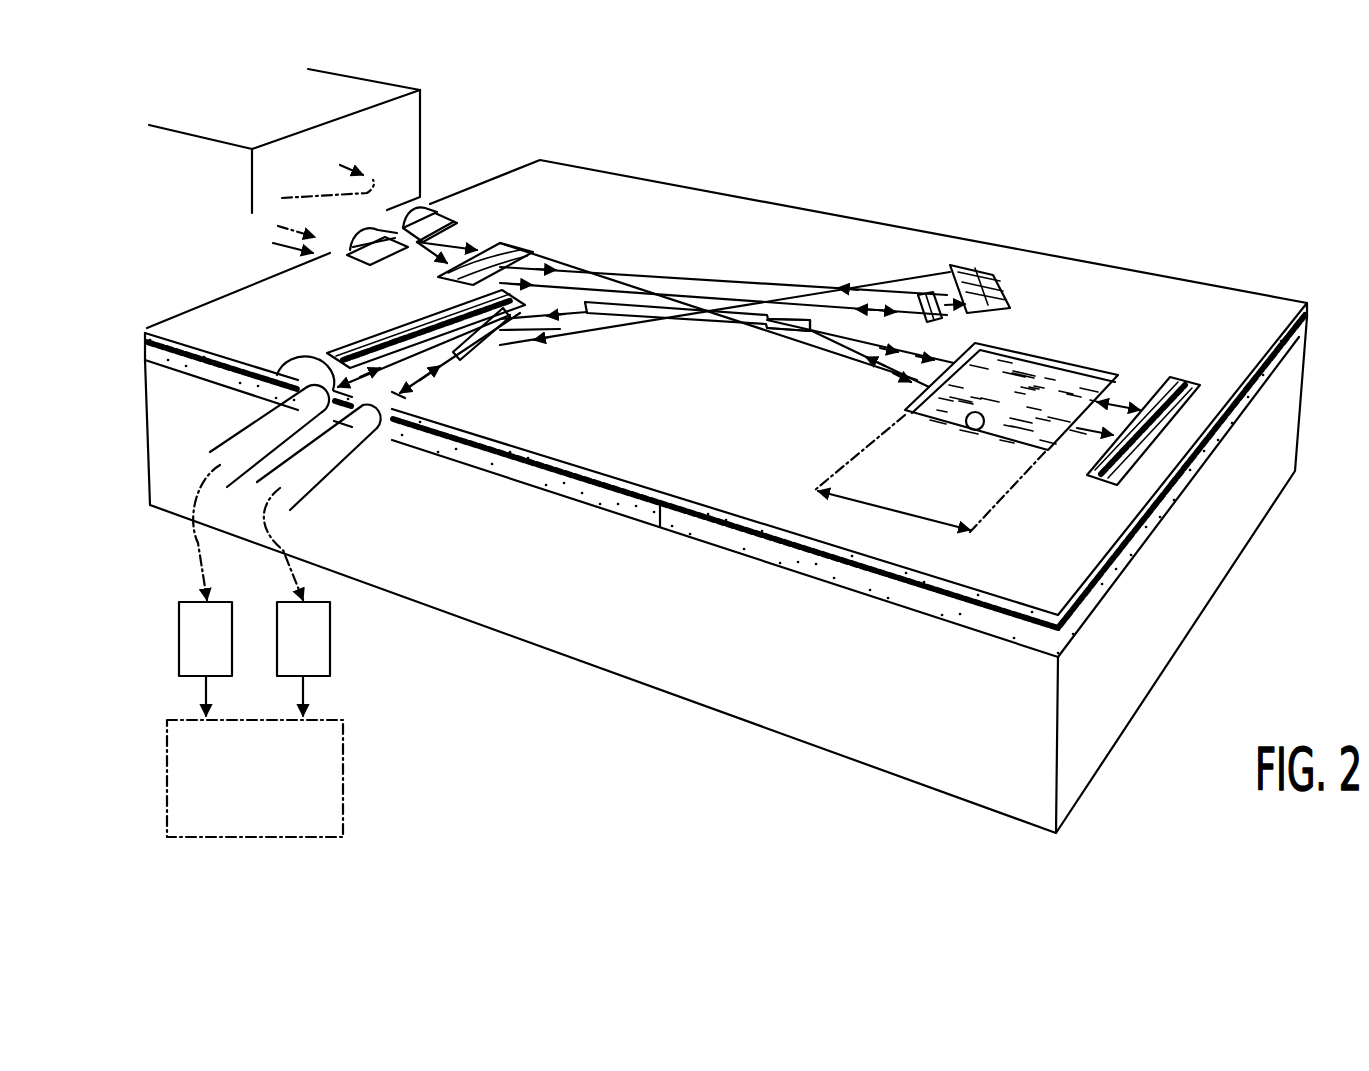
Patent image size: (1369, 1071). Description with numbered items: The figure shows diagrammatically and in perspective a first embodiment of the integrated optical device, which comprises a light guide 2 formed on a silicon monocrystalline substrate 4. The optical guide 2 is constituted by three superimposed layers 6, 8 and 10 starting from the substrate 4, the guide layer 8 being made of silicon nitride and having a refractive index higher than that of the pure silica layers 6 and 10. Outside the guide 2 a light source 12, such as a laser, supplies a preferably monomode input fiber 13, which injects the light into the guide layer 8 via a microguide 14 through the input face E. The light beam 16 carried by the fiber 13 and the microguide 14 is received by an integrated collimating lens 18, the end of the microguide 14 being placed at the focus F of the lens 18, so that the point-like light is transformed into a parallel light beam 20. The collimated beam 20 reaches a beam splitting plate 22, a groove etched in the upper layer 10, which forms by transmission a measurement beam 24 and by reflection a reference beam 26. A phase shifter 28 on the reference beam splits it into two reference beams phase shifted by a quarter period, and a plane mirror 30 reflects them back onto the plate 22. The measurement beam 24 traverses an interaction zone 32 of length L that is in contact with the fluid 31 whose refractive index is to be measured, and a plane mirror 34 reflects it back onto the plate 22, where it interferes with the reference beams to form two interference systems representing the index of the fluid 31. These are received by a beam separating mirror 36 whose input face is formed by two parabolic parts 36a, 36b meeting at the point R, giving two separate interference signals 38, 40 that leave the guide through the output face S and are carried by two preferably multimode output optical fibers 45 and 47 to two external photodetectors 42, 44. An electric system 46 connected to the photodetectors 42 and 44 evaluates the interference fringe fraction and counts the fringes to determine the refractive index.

The light guide 2 is at (130, 351).
The silicon monocrystalline substrate 4 is at (148, 482).
The layer 6 is at (140, 360).
The guide layer 8 is at (143, 338).
The upper layer 10 is at (143, 333).
The light source 12 is at (420, 100).
The input fiber 13 is at (372, 226).
The microguide 14 is at (445, 203).
The light beam 16 is at (282, 198).
The integrated collimating lens 18 is at (505, 244).
The parallel light beam 20 is at (613, 283).
The beam splitting plate 22 is at (767, 307).
The measurement beam 24 is at (807, 345).
The reference beam 26 is at (873, 285).
The phase shifter 28 is at (925, 323).
The plane mirror 30 is at (977, 267).
The fluid 31 is at (1067, 383).
The interaction zone 32 is at (972, 431).
The plane mirror 34 is at (1180, 380).
The beam splitting or separating mirror 36 is at (345, 353).
The parabolic part 36a is at (520, 330).
The parabolic part 36b is at (400, 395).
The interference signal 38 is at (257, 397).
The interference signal 40 is at (400, 423).
The photodetector 42 is at (180, 615).
The photodetector 44 is at (318, 662).
The output optical fiber 45 is at (293, 428).
The electric system 46 is at (167, 725).
The output optical fiber 47 is at (307, 487).
The input face E is at (273, 273).
The focus F is at (410, 247).
The meeting point R is at (462, 350).
The output face S is at (660, 527).
The length of the interaction zone L is at (930, 473).